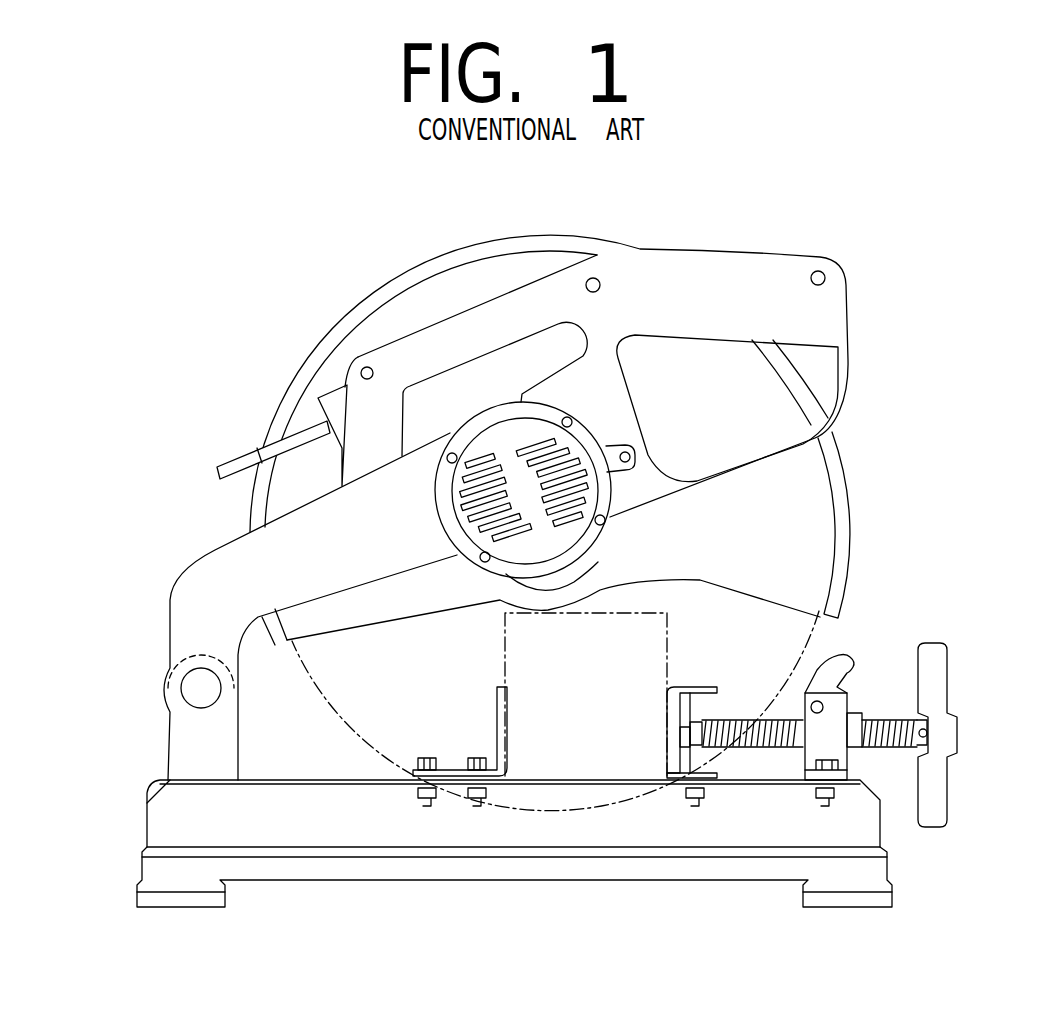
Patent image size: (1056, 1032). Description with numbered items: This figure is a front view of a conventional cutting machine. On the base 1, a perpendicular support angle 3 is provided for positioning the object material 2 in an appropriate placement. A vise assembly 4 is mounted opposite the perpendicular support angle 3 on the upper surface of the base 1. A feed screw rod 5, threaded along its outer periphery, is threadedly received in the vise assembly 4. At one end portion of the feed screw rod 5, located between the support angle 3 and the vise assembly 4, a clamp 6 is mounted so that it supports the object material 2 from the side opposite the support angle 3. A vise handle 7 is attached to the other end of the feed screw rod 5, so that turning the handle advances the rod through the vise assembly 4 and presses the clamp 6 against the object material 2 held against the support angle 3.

The base 1 is at (320, 822).
The object material 2 is at (567, 733).
The perpendicular support angle 3 is at (497, 713).
The vise assembly 4 is at (850, 661).
The feed screw rod 5 is at (897, 748).
The clamp 6 is at (693, 692).
The vise handle 7 is at (942, 668).